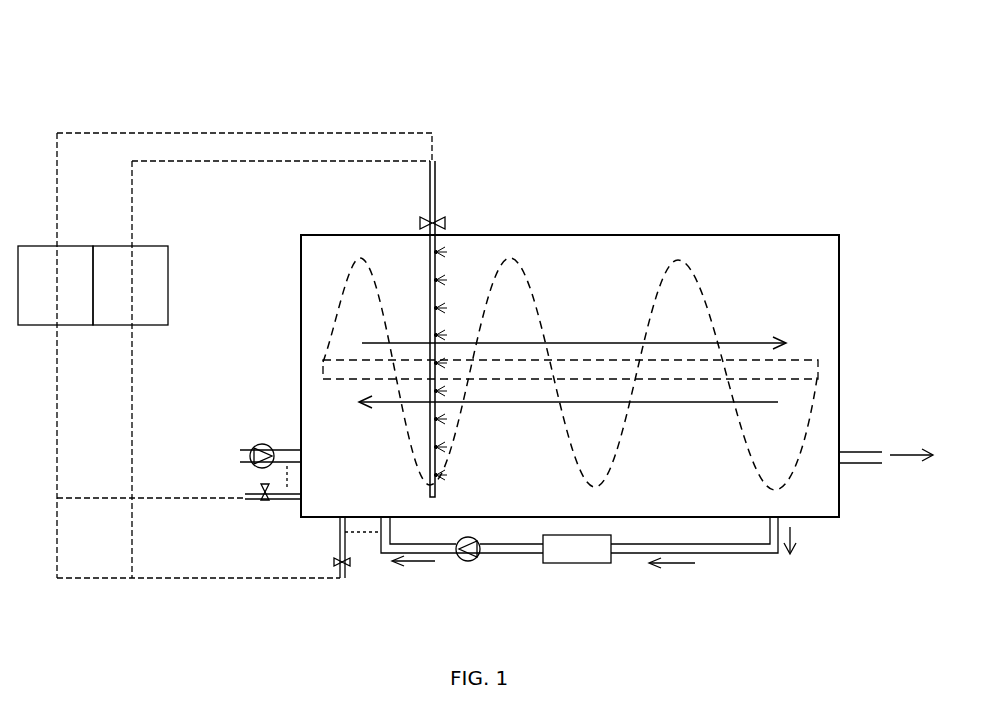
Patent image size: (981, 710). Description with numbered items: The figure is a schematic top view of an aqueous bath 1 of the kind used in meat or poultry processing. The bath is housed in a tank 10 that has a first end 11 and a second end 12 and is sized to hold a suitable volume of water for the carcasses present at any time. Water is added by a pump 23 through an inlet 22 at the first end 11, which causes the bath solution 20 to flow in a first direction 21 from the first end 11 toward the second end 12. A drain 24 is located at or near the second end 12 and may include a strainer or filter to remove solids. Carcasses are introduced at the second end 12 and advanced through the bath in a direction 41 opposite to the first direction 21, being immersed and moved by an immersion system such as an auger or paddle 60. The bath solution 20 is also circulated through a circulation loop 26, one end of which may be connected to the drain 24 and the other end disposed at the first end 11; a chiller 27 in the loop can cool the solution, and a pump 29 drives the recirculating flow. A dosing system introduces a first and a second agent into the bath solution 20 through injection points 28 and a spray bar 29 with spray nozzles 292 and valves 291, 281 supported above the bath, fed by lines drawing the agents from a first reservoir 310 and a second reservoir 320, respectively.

The aqueous bath 1 is at (213, 62).
The tank 10 is at (300, 248).
The first end 11 is at (301, 351).
The second end 12 is at (839, 343).
The bath solution 20 is at (567, 248).
The first direction 21 is at (592, 345).
The inlet 22 is at (290, 446).
The pump 23 is at (252, 441).
The drain 24 is at (882, 465).
The circulation loop 26 is at (722, 555).
The chiller 27 is at (612, 565).
The injection points 28 is at (340, 557).
The pump / spray bar 29 is at (437, 212).
The direction 41 is at (497, 402).
The auger or paddle 60 is at (715, 318).
The valve 281 is at (265, 501).
The spray valve 291 is at (422, 223).
The spray nozzles 292 is at (450, 279).
The first reservoir 310 is at (225, 355).
The second reservoir 320 is at (261, 369).